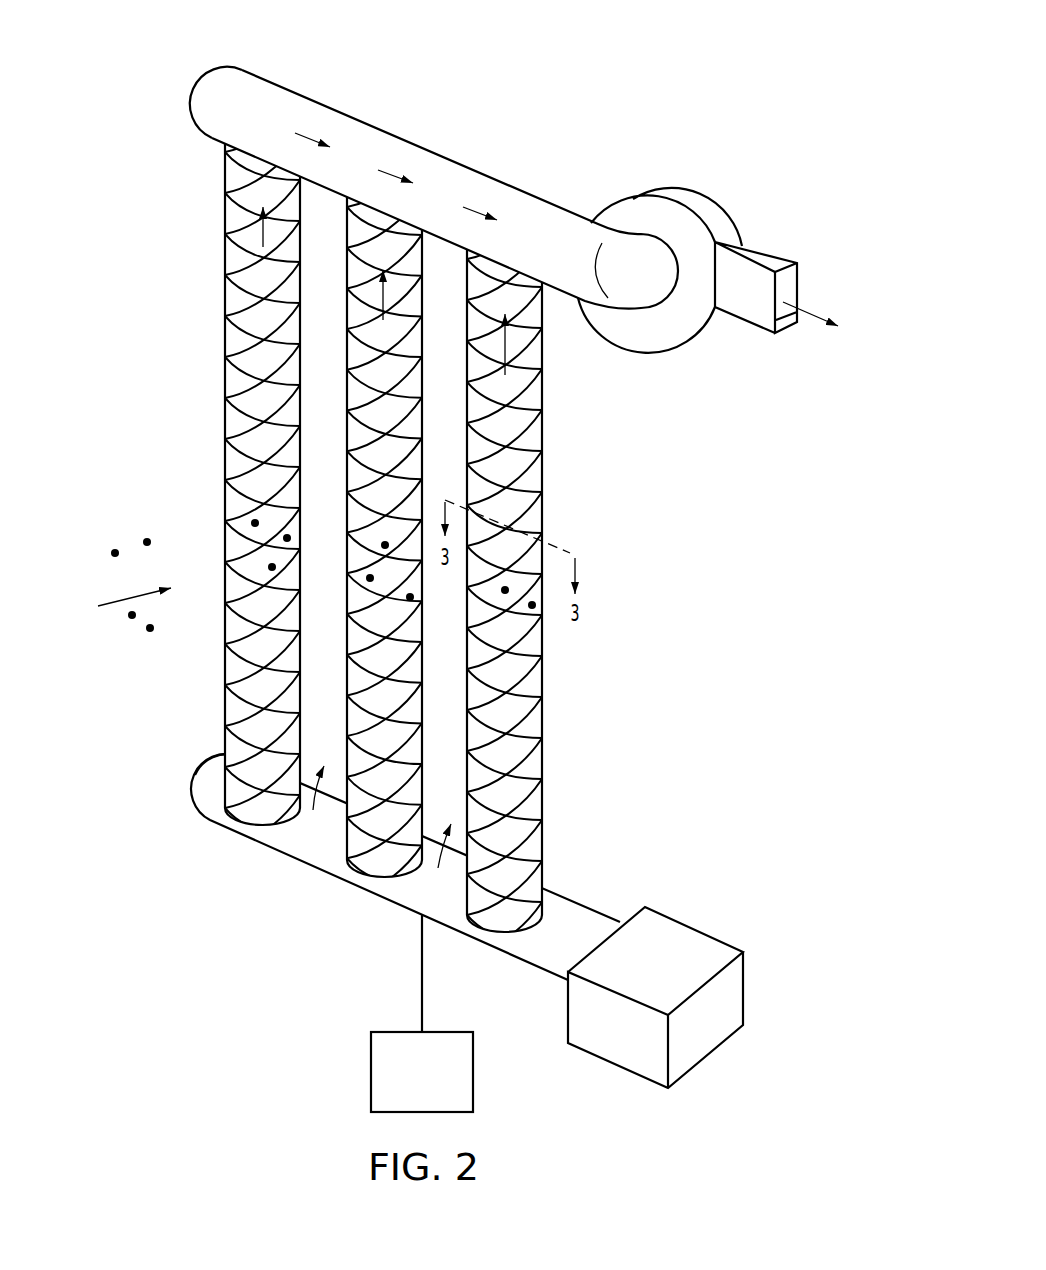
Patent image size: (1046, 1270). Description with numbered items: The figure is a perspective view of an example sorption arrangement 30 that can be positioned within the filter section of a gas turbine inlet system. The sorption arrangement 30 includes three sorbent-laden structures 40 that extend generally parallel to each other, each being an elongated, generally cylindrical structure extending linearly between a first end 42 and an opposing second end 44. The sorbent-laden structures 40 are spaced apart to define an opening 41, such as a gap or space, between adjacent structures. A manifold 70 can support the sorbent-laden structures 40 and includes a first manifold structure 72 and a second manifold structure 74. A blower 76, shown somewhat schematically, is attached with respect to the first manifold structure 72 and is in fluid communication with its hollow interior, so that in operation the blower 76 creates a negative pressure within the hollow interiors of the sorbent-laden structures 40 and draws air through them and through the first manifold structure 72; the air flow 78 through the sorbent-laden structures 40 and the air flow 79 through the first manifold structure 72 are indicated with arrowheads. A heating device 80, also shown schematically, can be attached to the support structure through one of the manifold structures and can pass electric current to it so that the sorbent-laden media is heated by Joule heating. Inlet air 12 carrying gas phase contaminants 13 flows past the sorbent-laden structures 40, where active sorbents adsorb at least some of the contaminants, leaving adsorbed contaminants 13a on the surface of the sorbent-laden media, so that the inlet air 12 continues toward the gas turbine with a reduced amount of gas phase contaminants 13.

The sorption arrangement 30 is at (176, 66).
The first end 42 is at (223, 172).
The first manifold structure 72 is at (443, 157).
The air flow 79 is at (393, 170).
The air flow 78 is at (258, 222).
The sorbent-laden structure 40 is at (292, 335).
The blower 76 is at (672, 190).
The manifold 70 is at (766, 131).
The gas phase contaminants 13 is at (145, 539).
The adsorbed contaminants 13a is at (251, 520).
The inlet air 12 is at (113, 603).
The second end 44 is at (217, 754).
The opening 41 is at (379, 830).
The second manifold structure 74 is at (317, 872).
The heating device 80 is at (371, 1068).